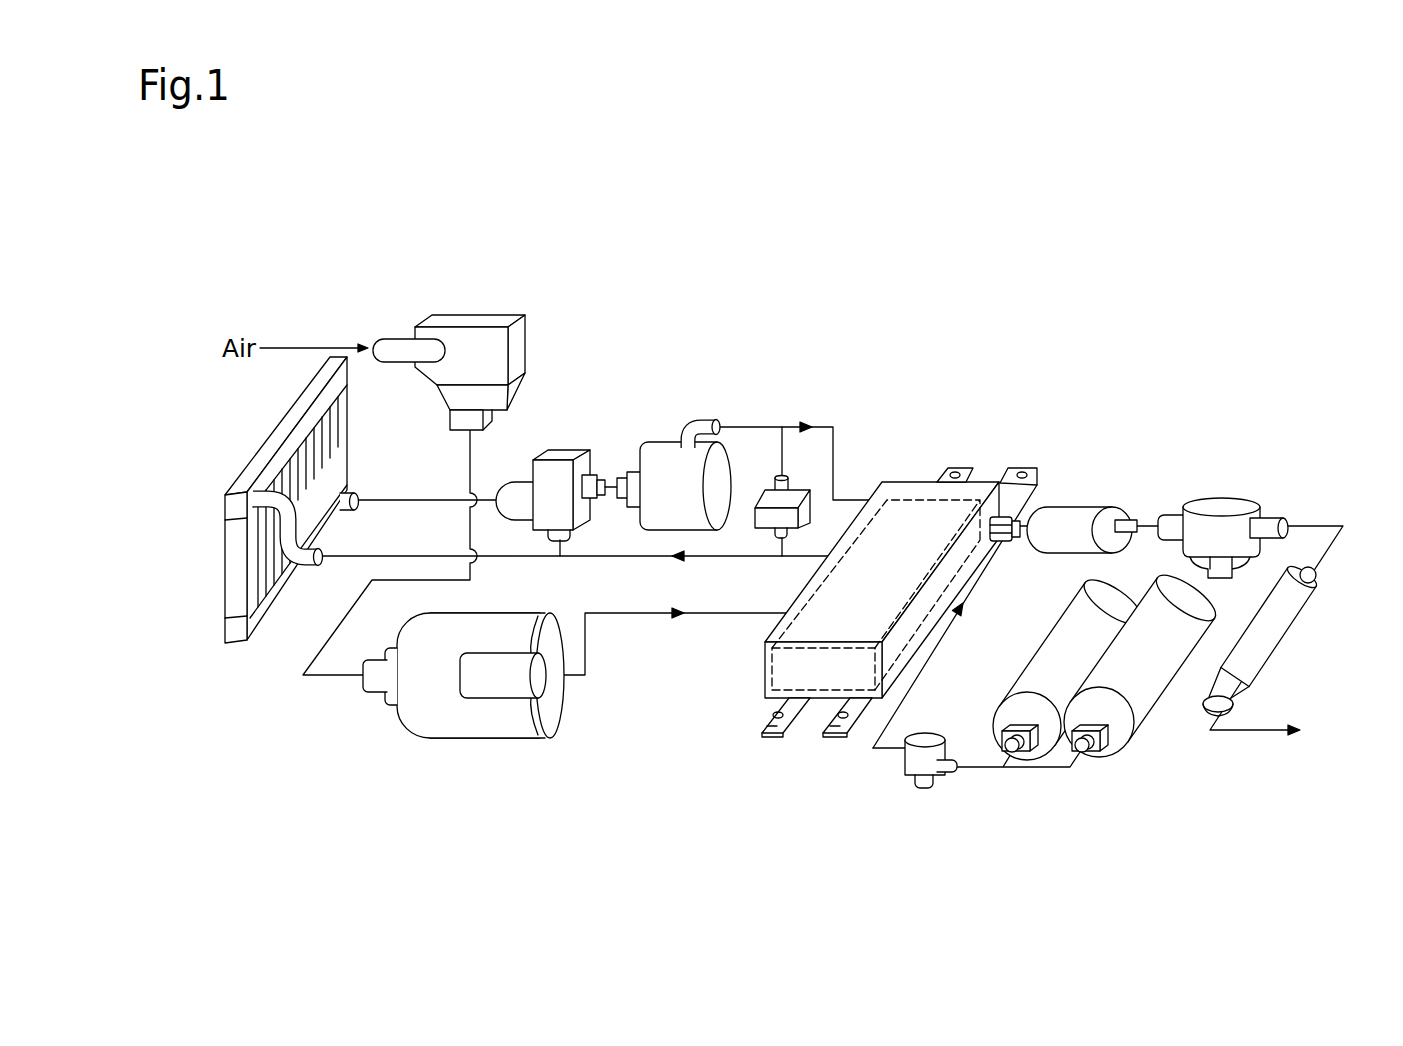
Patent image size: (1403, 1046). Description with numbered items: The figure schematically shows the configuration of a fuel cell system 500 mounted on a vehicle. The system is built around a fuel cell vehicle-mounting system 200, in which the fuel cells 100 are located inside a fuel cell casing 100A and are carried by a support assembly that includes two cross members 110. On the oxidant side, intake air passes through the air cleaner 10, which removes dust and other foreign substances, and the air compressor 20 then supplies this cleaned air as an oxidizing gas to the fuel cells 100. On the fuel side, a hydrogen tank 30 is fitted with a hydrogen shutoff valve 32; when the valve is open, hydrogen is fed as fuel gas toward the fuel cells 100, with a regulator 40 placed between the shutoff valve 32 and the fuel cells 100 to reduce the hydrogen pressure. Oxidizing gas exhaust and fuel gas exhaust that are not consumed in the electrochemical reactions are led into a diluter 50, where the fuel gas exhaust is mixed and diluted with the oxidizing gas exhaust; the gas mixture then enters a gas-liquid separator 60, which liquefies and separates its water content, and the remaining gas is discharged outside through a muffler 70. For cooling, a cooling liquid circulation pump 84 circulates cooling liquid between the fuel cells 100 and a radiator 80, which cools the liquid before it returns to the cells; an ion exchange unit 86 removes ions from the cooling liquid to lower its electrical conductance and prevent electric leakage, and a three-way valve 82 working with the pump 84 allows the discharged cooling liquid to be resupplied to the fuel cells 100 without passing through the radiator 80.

The fuel cell system 500 is at (336, 232).
The fuel cell vehicle-mounting system 200 is at (984, 374).
The air cleaner 10 is at (463, 314).
The air compressor 20 is at (480, 742).
The hydrogen tank 30 is at (1090, 763).
The hydrogen shutoff valve 32 is at (1107, 742).
The regulator 40 is at (905, 760).
The diluter 50 is at (1078, 505).
The gas-liquid separator 60 is at (1218, 502).
The muffler 70 is at (1293, 633).
The radiator 80 is at (265, 437).
The three-way valve 82 is at (563, 450).
The cooling liquid circulation pump 84 is at (707, 413).
The ion exchange unit 86 is at (800, 486).
The fuel cells 100 is at (886, 478).
The fuel cell casing 100A is at (928, 480).
The cross members 110 is at (767, 742).